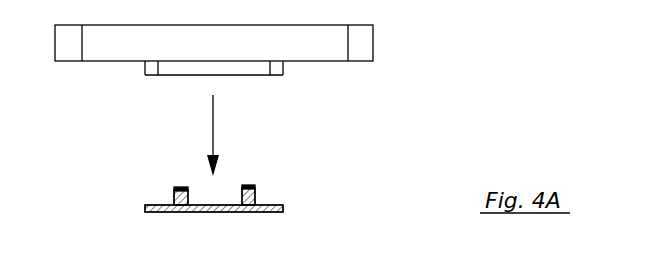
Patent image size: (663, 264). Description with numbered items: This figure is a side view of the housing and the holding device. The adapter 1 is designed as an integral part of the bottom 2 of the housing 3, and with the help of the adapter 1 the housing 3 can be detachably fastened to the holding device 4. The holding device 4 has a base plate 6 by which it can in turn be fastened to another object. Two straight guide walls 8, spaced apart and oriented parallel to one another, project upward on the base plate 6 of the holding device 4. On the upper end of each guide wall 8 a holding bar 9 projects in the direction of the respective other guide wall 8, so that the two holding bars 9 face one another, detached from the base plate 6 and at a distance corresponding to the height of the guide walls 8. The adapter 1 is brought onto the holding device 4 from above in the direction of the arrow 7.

The adapter 1 is at (170, 75).
The bottom 2 is at (327, 62).
The housing 3 is at (374, 43).
The holding device 4 is at (318, 205).
The base plate 6 is at (193, 212).
The arrow 7 is at (215, 122).
The guide walls 8 is at (173, 197).
The holding bar 9 is at (186, 184).